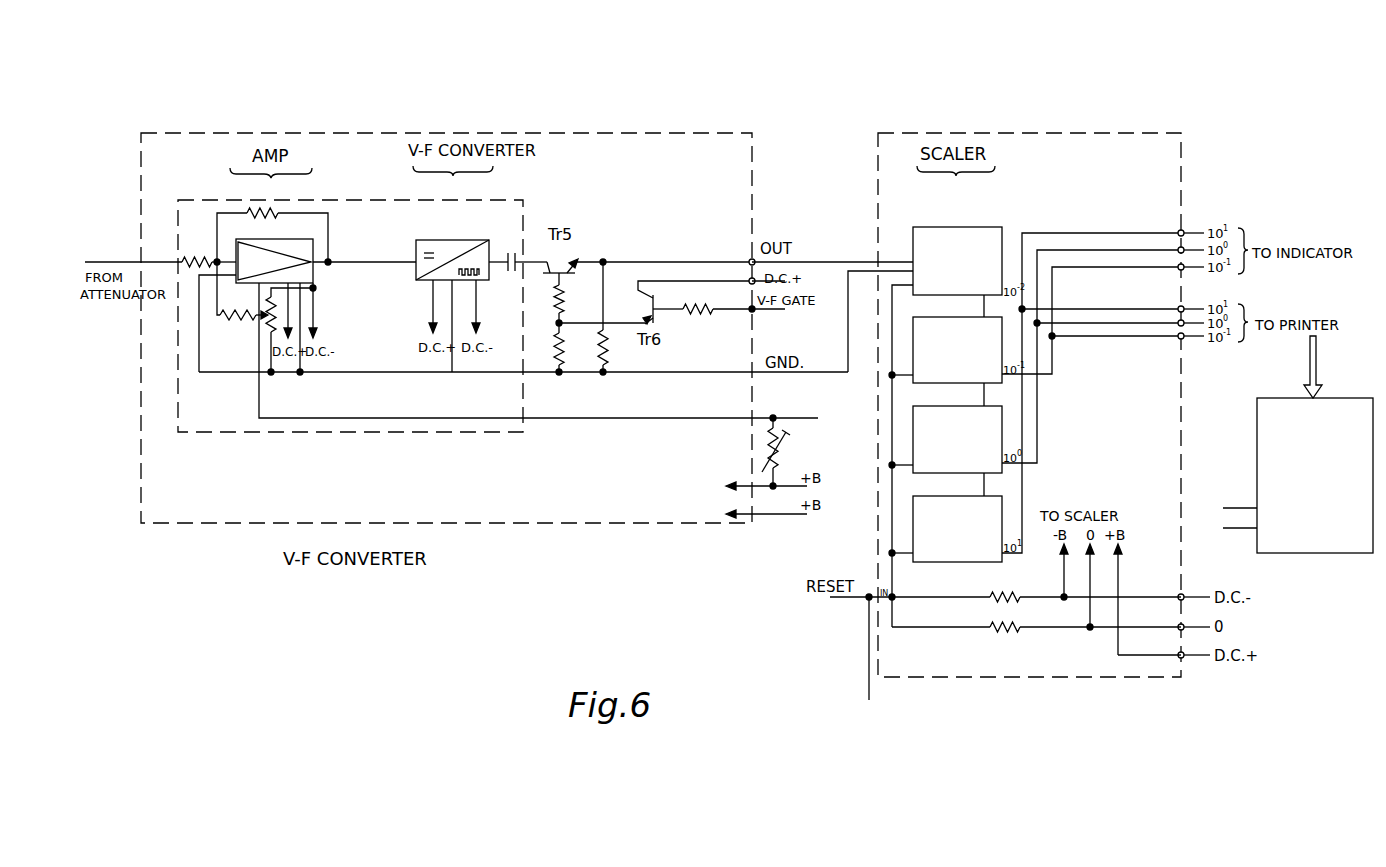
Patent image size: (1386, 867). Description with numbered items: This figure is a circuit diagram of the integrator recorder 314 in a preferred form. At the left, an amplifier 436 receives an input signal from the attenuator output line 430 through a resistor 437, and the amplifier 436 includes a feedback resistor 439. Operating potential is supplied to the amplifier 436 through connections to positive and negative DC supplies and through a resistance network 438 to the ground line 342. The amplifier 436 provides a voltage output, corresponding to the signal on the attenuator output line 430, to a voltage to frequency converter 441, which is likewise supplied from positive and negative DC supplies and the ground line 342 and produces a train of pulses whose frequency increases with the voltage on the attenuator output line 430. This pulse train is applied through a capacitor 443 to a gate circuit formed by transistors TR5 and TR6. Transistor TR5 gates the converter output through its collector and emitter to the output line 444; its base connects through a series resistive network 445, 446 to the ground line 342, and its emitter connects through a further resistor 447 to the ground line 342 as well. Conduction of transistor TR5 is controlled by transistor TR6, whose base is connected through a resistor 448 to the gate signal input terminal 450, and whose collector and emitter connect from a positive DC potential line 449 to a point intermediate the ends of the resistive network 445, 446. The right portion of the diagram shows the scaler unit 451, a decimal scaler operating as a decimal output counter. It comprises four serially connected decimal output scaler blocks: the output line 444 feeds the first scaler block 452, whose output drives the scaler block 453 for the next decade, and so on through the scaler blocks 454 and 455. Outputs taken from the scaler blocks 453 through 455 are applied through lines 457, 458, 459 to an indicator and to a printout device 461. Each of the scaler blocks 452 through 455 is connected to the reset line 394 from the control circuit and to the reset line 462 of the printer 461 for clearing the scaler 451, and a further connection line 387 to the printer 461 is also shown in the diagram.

The attenuator output line 430 is at (122, 262).
The resistor 437 is at (196, 258).
The feedback resistor 439 is at (270, 213).
The amplifier 436 is at (322, 283).
The resistance network 438 is at (238, 330).
The ground line 342 is at (363, 378).
The voltage to frequency converter 441 is at (445, 240).
The capacitor 443 is at (514, 254).
The output line 444 is at (836, 261).
The series resistive network resistor 445 is at (550, 306).
The series resistive network resistor 446 is at (544, 349).
The resistor 447 is at (609, 346).
The resistor 448 is at (707, 318).
The positive DC potential line 449 is at (697, 283).
The V-F gate terminal 450 is at (772, 310).
The scaler unit 451 is at (1012, 199).
The first scaler block 452 is at (957, 261).
The scaler block 453 is at (957, 350).
The scaler block 454 is at (957, 439).
The scaler block 455 is at (957, 529).
The output line 457 is at (1057, 361).
The output line 458 is at (1040, 410).
The output line 459 is at (1022, 492).
The reset line 394 is at (845, 601).
The reset line 462 is at (1239, 507).
The printer control line 387 is at (1248, 532).
The printout device 461 is at (1304, 545).
The integrator recorder 314 is at (758, 581).